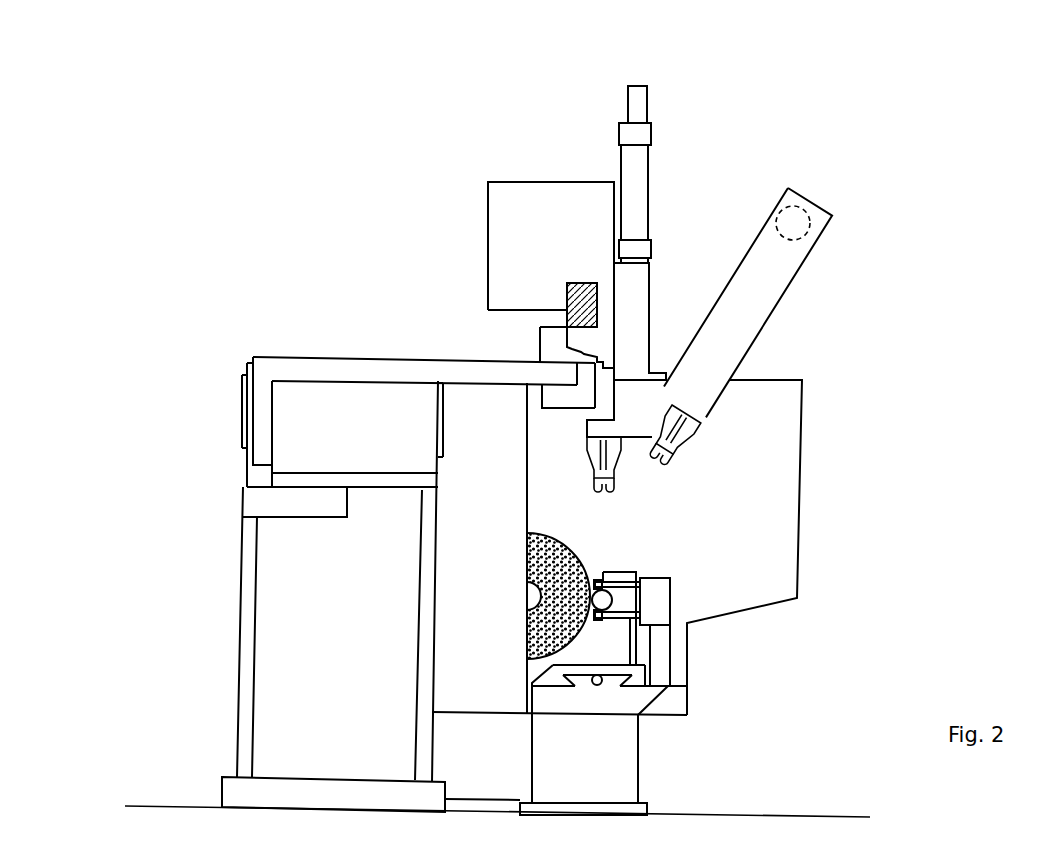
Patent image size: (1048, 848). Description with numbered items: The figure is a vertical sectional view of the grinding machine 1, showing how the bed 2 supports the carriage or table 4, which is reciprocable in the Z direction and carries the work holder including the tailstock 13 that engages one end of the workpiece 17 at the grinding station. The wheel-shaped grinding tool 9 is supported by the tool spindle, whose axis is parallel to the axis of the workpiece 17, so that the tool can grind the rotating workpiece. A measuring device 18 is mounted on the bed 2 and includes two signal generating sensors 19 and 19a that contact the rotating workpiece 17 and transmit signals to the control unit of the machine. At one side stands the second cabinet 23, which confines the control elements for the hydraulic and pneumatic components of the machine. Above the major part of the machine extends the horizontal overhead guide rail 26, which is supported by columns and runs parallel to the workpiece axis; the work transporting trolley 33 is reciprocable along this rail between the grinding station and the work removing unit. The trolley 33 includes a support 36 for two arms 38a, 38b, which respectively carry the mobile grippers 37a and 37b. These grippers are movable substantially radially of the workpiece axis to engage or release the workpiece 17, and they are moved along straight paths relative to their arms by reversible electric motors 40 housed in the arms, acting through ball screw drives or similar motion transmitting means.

The grinding machine 1 is at (358, 273).
The bed 2 is at (630, 722).
The carriage 4 is at (637, 675).
The grinding tool 9 is at (570, 548).
The tailstock 13 is at (612, 592).
The workpiece 17 is at (618, 600).
The measuring device 18 is at (657, 620).
The signal generating sensor 19 is at (606, 571).
The signal generating sensor 19a is at (608, 627).
The second cabinet 23 is at (285, 556).
The guide rail 26 is at (642, 233).
The trolley 33 is at (597, 197).
The support 36 is at (639, 302).
The gripper 37a is at (614, 485).
The gripper 37b is at (678, 460).
The arm 38a is at (580, 282).
The arm 38b is at (790, 253).
The reversible electric motor 40 is at (802, 214).